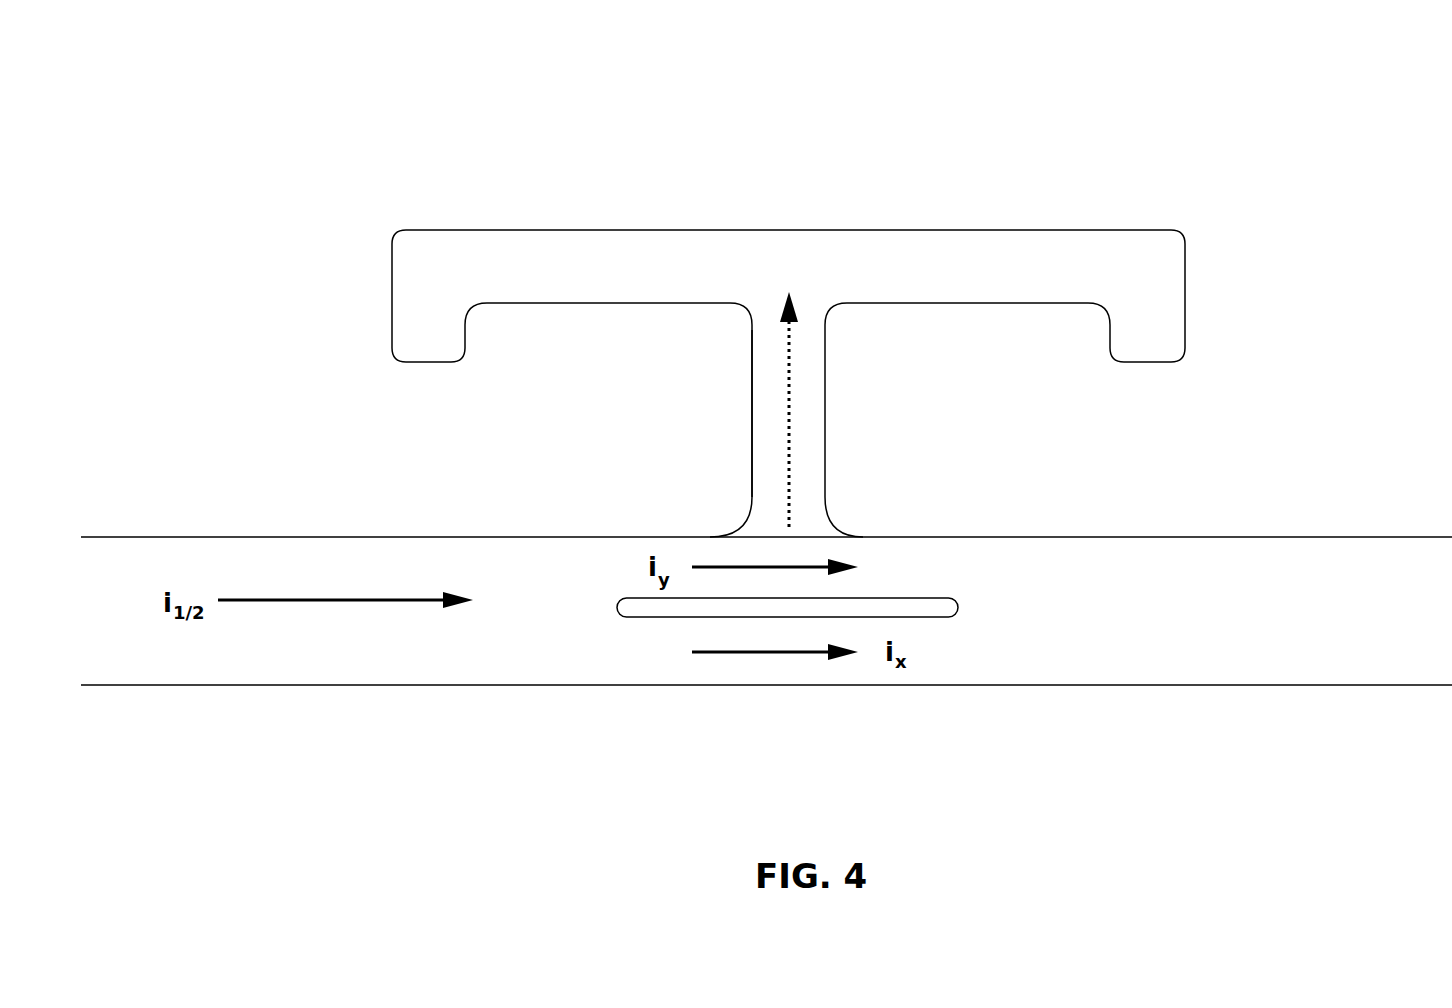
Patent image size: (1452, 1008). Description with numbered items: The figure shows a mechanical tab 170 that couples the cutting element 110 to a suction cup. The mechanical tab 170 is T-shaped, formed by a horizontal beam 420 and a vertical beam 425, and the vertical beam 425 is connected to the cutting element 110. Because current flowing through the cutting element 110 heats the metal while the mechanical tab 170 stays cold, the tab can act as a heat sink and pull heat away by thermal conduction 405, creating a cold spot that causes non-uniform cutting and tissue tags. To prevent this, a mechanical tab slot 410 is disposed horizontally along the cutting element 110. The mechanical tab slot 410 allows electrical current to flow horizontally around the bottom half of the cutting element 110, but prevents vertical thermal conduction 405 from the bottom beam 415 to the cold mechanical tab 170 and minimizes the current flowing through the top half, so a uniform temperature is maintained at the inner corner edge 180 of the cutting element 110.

The mechanical tab 170 is at (239, 69).
The cutting element 110 is at (1232, 615).
The inner corner edge 180 is at (943, 685).
The horizontal beam 420 is at (1013, 230).
The vertical beam 425 is at (752, 368).
The thermal conduction 405 is at (788, 390).
The mechanical tab slot 410 is at (893, 598).
The bottom beam 415 is at (678, 660).